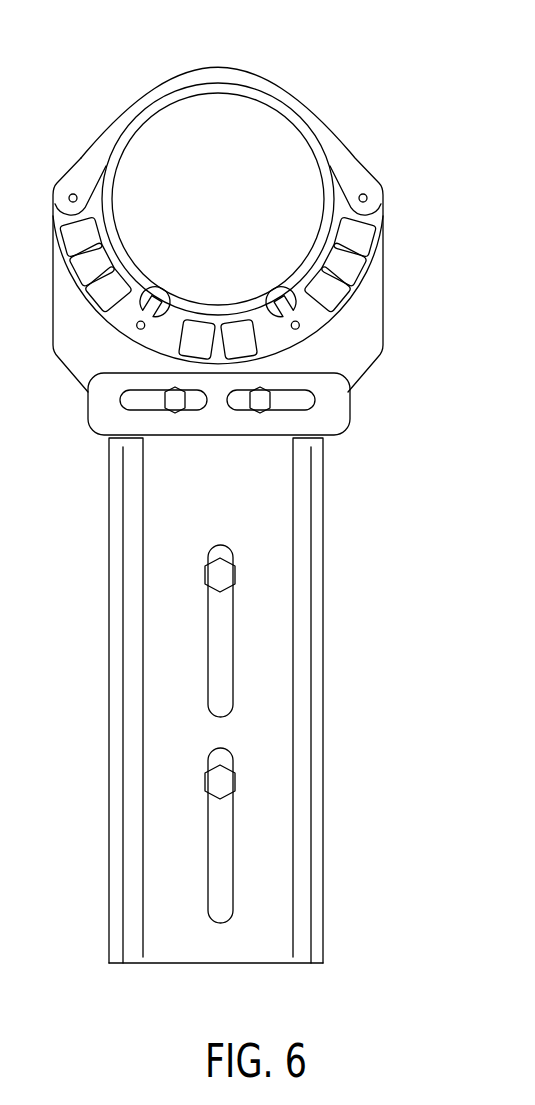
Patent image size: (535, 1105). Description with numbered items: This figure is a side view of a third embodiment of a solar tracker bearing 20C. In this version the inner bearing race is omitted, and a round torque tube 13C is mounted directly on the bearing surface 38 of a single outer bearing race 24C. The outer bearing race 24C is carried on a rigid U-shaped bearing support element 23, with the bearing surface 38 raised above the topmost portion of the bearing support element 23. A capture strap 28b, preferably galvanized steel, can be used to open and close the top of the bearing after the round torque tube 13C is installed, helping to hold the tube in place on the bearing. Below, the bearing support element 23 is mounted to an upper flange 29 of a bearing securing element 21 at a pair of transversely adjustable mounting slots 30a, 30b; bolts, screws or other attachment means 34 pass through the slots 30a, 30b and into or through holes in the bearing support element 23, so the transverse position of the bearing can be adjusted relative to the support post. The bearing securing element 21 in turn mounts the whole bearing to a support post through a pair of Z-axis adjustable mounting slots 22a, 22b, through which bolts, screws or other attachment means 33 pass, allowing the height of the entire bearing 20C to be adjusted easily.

The solar tracker bearing 20C is at (440, 70).
The round torque tube 13C is at (306, 133).
The capture strap 28b is at (340, 143).
The bearing surface 38 is at (330, 213).
The outer bearing race 24C is at (333, 247).
The bearing support element 23 is at (385, 325).
The upper flange 29 is at (88, 400).
The transversely adjustable mounting slot 30a is at (150, 400).
The transversely adjustable mounting slot 30b is at (285, 400).
The attachment means 34 is at (175, 400).
The bearing securing element 21 is at (324, 734).
The Z-axis adjustable mounting slot 22a is at (221, 631).
The Z-axis adjustable mounting slot 22b is at (221, 836).
The attachment means 33 is at (221, 575).